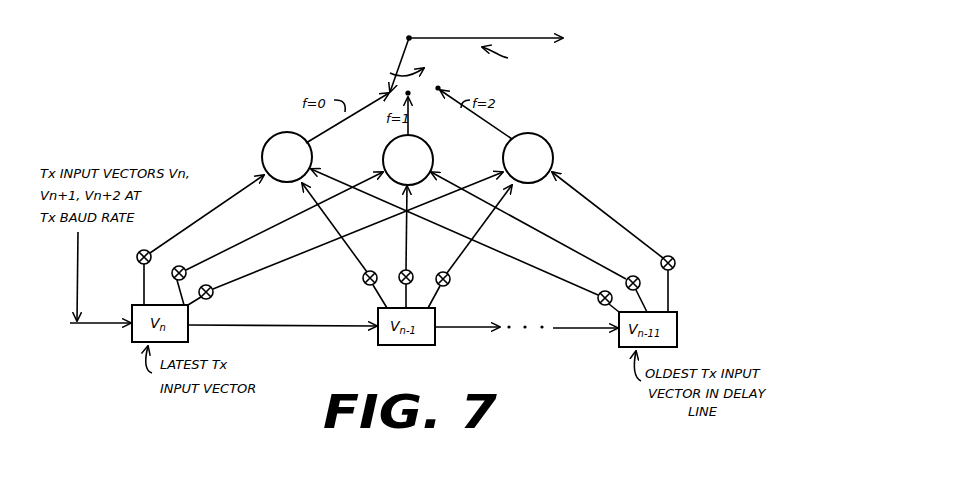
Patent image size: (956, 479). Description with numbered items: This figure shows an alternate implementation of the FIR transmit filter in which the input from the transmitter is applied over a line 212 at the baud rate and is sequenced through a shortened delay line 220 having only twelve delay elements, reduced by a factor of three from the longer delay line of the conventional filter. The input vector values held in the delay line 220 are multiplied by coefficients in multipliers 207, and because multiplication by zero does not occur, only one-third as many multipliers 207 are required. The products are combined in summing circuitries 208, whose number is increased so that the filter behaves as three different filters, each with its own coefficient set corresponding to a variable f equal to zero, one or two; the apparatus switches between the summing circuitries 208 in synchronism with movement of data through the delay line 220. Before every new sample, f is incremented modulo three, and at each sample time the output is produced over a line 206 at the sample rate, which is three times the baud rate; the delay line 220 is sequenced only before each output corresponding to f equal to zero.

The output line 206 is at (476, 38).
The multipliers 207 is at (172, 275).
The summing circuitry 208 is at (267, 141).
The input line 212 is at (97, 327).
The delay line 220 is at (711, 328).